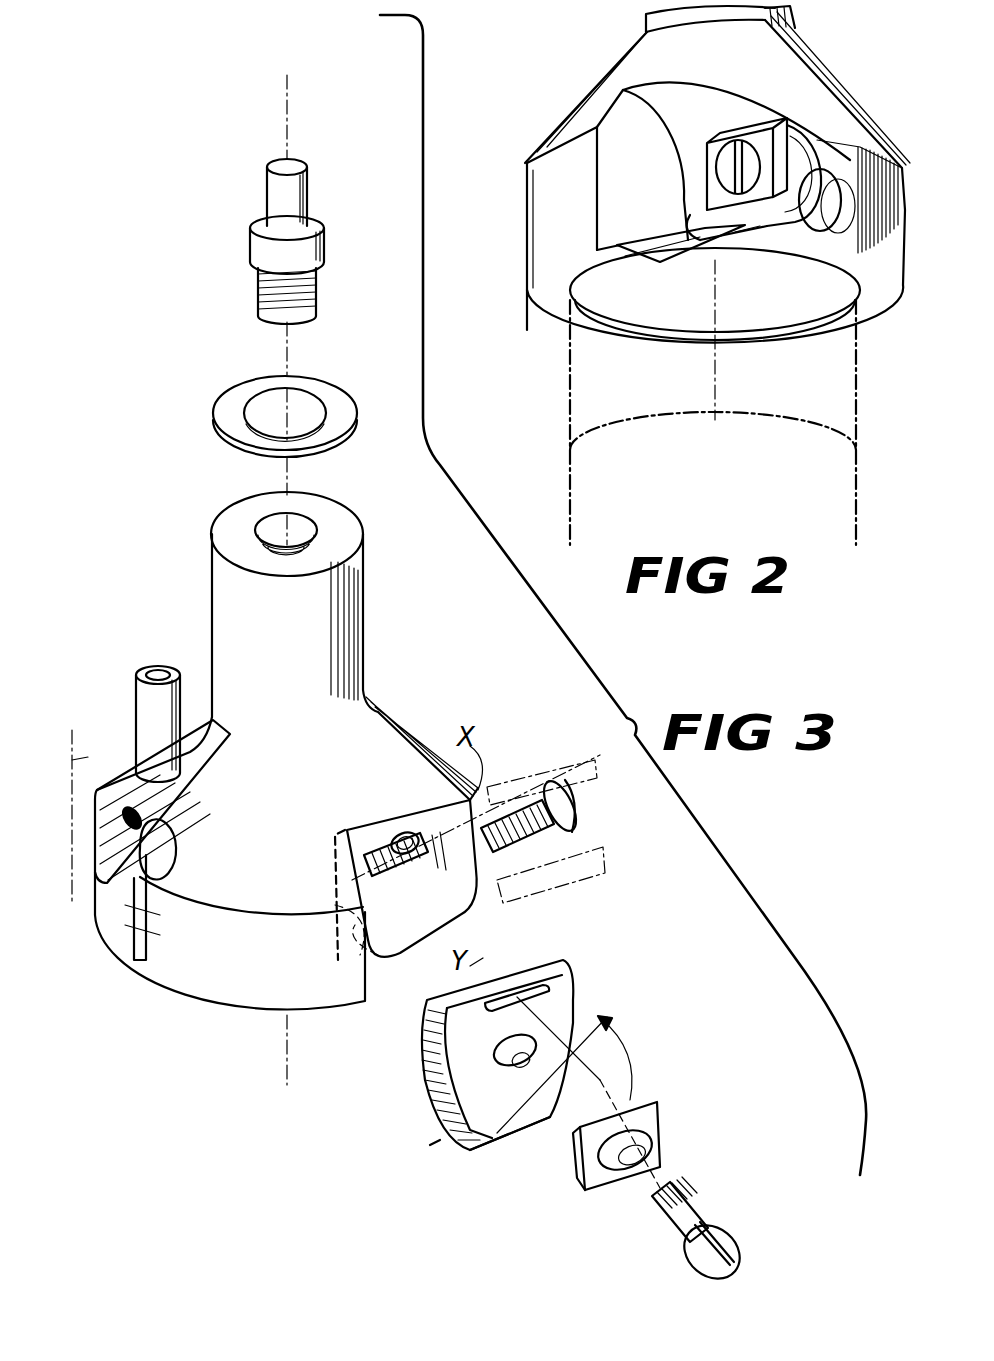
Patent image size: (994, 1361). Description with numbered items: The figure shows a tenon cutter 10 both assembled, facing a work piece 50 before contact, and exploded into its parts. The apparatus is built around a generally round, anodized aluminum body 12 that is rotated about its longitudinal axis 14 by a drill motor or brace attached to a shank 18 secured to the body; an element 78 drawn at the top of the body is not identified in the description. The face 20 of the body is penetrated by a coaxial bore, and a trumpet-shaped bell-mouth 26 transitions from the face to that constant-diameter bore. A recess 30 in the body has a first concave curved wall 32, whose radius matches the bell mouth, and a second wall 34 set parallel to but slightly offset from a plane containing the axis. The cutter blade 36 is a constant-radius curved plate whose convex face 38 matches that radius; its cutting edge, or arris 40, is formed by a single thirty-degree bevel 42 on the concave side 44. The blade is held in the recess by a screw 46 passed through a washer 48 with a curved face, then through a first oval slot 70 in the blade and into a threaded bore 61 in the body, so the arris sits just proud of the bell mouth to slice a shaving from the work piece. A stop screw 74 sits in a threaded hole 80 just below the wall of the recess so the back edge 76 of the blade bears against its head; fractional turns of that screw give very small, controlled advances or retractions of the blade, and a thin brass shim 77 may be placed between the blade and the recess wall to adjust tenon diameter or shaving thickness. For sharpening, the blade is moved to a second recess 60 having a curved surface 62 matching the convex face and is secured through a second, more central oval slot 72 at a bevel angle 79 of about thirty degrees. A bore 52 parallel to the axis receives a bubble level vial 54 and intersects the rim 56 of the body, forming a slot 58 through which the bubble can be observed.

In FIG. 3, the tenon cutter 10 is at (208, 580).
In FIG. 2, the tenon cutter 10 is at (600, 80).
In FIG. 3, the body 12 is at (400, 712).
In FIG. 2, the body 12 is at (528, 198).
In FIG. 3, the longitudinal axis 14 is at (285, 360).
In FIG. 2, the longitudinal axis 14 is at (716, 363).
In FIG. 3, the shank 18 is at (270, 163).
In FIG. 2, the face 20 is at (560, 303).
In FIG. 2, the bell-mouth 26 is at (692, 306).
In FIG. 3, the recess 30 is at (360, 836).
In FIG. 2, the recess 30 is at (714, 129).
In FIG. 3, the first concave curved wall 32 is at (432, 940).
In FIG. 2, the first concave curved wall 32 is at (707, 117).
In FIG. 3, the second wall 34 is at (350, 973).
In FIG. 2, the second wall 34 is at (648, 167).
In FIG. 3, the cutter blade 36 is at (573, 994).
In FIG. 2, the cutter blade 36 is at (680, 245).
In FIG. 2, the convex face 38 is at (640, 255).
In FIG. 3, the arris 40 is at (450, 1143).
In FIG. 3, the bevel 42 is at (428, 1073).
In FIG. 3, the concave side 44 is at (540, 1110).
In FIG. 3, the screw 46 is at (690, 1203).
In FIG. 2, the screw 46 is at (745, 165).
In FIG. 3, the washer 48 is at (660, 1116).
In FIG. 2, the washer 48 is at (775, 135).
In FIG. 2, the work piece 50 is at (700, 482).
In FIG. 3, the bore 52 is at (160, 850).
In FIG. 3, the bubble level vial 54 is at (158, 666).
In FIG. 3, the rim 56 is at (212, 990).
In FIG. 2, the rim 56 is at (545, 236).
In FIG. 3, the slot 58 is at (137, 970).
In FIG. 3, the second recess 60 is at (188, 731).
In FIG. 3, the threaded bore 61 is at (425, 832).
In FIG. 3, the curved surface 62 is at (210, 715).
In FIG. 3, the first oval slot 70 is at (560, 968).
In FIG. 3, the second oval slot 72 is at (518, 1066).
In FIG. 3, the stop screw 74 is at (575, 816).
In FIG. 2, the stop screw 74 is at (825, 195).
In FIG. 2, the back edge 76 is at (765, 236).
In FIG. 3, the shim 77 is at (590, 770).
In FIG. 3, the threaded hole 78 is at (278, 522).
In FIG. 3, the bevel angle 79 is at (98, 764).
In FIG. 3, the threaded hole 80 is at (378, 870).